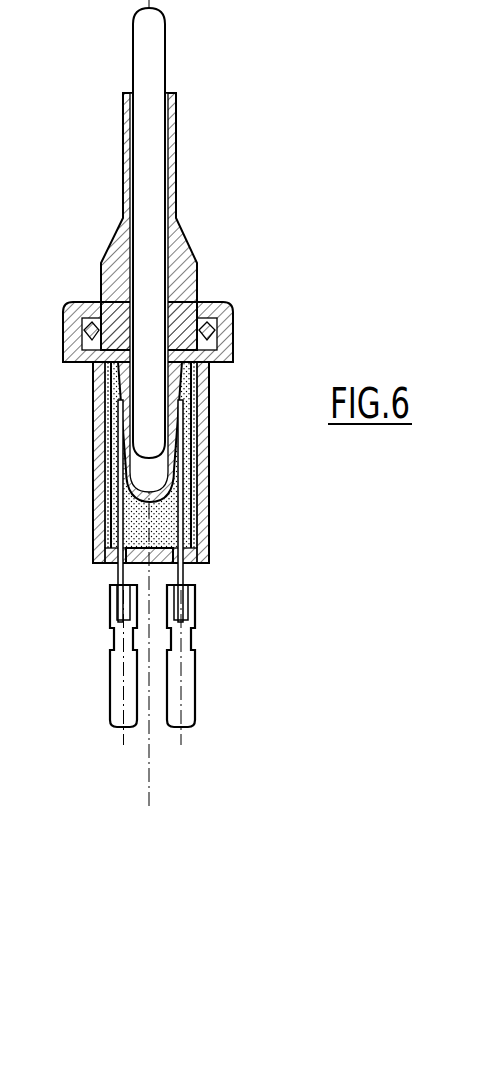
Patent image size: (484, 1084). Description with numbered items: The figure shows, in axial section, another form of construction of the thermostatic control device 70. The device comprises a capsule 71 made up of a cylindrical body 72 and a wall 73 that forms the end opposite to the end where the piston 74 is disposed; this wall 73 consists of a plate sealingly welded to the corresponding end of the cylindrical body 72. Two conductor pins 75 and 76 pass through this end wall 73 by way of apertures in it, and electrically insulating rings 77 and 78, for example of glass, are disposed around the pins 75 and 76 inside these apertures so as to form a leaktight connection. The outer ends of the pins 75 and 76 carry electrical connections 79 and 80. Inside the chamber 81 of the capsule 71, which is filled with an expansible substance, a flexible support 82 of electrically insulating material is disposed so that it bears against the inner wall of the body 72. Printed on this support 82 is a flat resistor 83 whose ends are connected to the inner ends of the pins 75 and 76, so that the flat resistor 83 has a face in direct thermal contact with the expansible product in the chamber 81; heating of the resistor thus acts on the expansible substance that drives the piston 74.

The thermostatic control device 70 is at (249, 319).
The capsule 71 is at (212, 405).
The cylindrical body 72 is at (198, 432).
The wall 73 is at (192, 589).
The piston 74 is at (152, 63).
The conductor pin 75 is at (118, 578).
The conductor pin 76 is at (183, 578).
The electrically insulating ring 77 is at (100, 547).
The electrically insulating ring 78 is at (202, 548).
The electrical connection 79 is at (121, 680).
The electrical connection 80 is at (184, 681).
The chamber 81 is at (113, 487).
The flexible support 82 is at (108, 432).
The flat resistor 83 is at (177, 486).